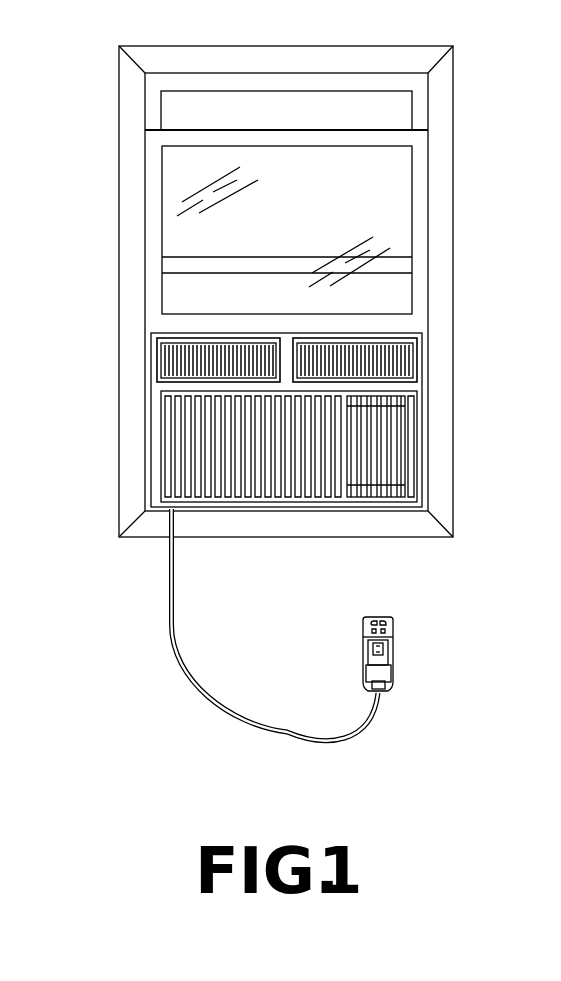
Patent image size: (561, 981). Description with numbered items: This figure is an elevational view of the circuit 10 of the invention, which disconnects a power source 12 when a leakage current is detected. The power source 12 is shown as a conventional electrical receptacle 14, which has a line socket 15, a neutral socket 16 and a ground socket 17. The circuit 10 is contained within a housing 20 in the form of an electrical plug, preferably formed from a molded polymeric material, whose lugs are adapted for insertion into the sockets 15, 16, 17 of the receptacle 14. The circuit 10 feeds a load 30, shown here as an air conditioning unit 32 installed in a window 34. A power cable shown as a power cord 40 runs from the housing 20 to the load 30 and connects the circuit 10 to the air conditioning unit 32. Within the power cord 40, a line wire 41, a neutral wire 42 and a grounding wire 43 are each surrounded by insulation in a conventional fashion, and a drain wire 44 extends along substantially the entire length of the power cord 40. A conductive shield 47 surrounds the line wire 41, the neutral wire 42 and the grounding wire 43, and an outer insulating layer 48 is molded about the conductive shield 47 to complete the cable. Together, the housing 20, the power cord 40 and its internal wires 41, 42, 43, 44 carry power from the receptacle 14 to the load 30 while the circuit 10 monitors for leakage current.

The circuit 10 is at (387, 651).
The power source 12 is at (381, 617).
The conventional electrical receptacle 14 is at (368, 636).
The line socket 15 is at (372, 624).
The neutral socket 16 is at (387, 624).
The ground socket 17 is at (388, 635).
The housing 20 is at (370, 663).
The load 30 is at (122, 420).
The air conditioning unit 32 is at (402, 428).
The window 34 is at (438, 302).
The power cord 40 is at (169, 580).
The line wire 41 is at (169, 612).
The neutral wire 42 is at (170, 643).
The grounding wire 43 is at (178, 672).
The drain wire 44 is at (210, 708).
The conductive shield 47 is at (245, 722).
The outer insulating layer 48 is at (174, 625).